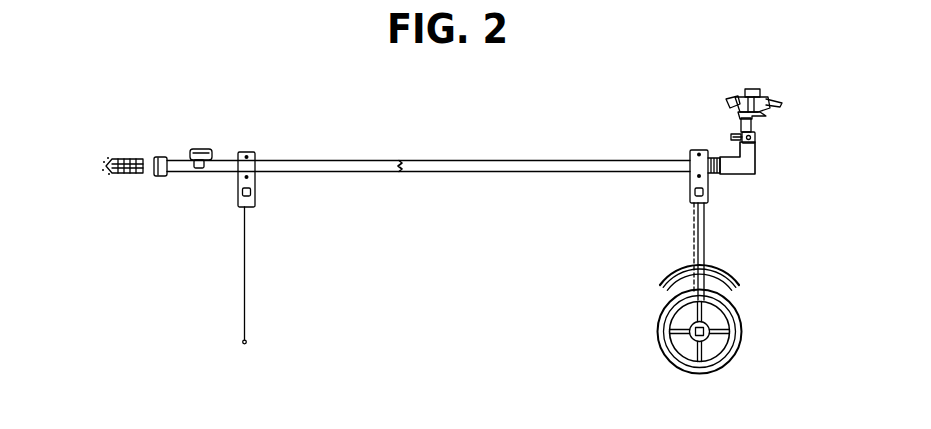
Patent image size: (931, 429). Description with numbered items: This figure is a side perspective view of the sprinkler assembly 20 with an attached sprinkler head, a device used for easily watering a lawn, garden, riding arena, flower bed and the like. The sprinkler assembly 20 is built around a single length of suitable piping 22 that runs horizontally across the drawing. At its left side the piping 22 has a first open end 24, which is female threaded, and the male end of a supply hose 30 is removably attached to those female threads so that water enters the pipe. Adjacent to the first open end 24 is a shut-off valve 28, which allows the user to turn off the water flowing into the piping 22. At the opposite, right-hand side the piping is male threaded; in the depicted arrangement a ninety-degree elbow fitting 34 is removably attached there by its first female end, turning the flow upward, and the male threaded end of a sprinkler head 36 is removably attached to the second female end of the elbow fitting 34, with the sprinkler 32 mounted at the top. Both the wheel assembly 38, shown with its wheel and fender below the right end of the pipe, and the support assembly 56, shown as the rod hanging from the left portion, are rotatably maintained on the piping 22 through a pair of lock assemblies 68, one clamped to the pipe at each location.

The sprinkler assembly 20 is at (483, 113).
The piping 22 is at (356, 166).
The first open end 24 is at (157, 176).
The shut-off valve 28 is at (200, 148).
The supply hose 30 is at (115, 157).
The sprinkler 32 is at (768, 110).
The ninety-degree elbow fitting 34 is at (753, 162).
The sprinkler head 36 is at (755, 142).
The wheel assembly 38 is at (725, 255).
The support assembly 56 is at (250, 263).
The lock assembly 68 is at (247, 185).